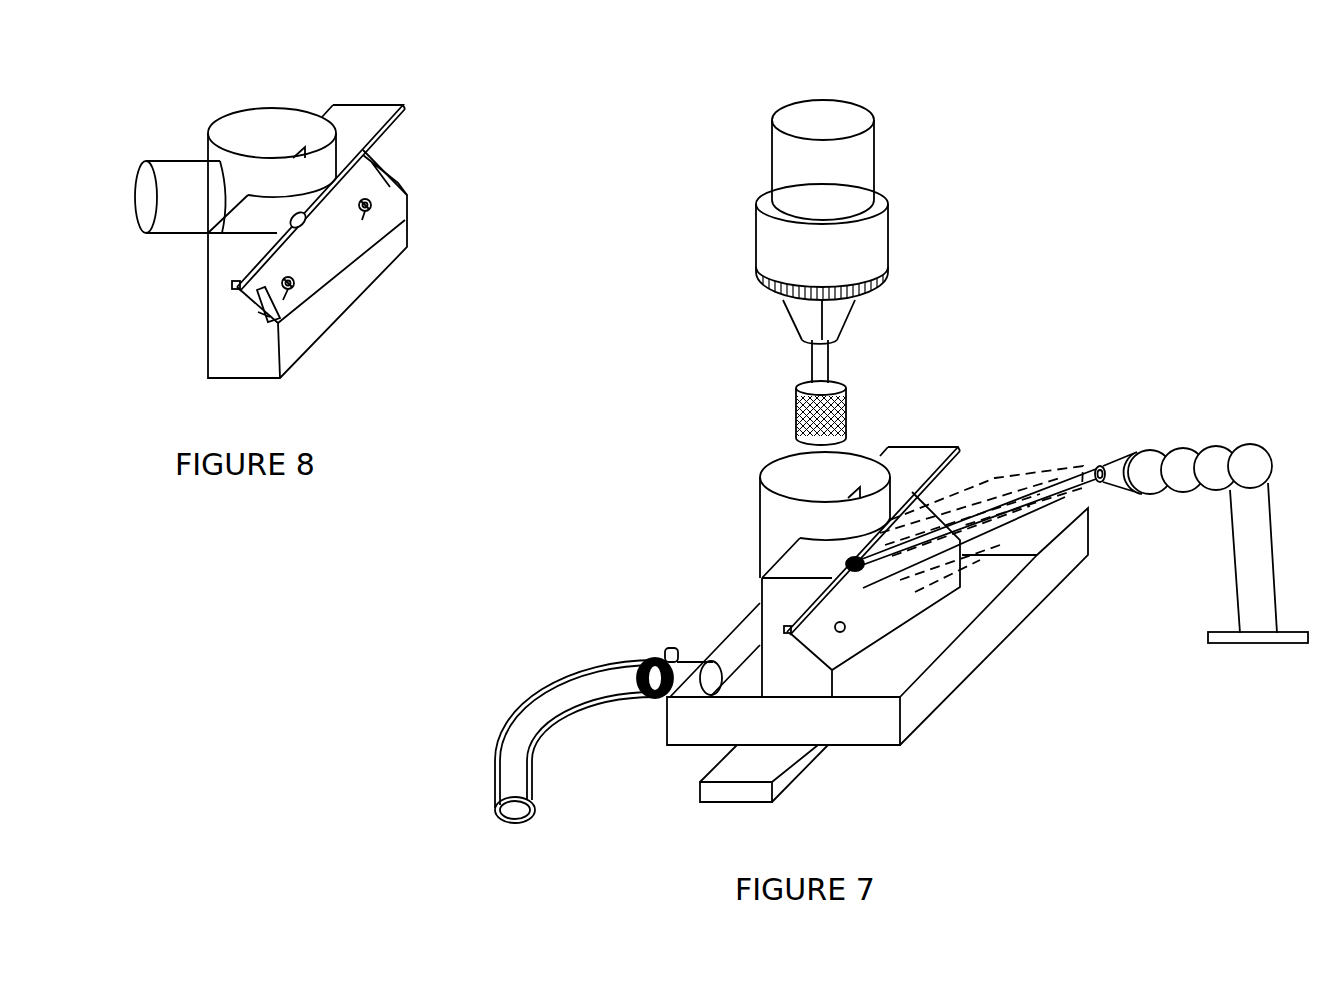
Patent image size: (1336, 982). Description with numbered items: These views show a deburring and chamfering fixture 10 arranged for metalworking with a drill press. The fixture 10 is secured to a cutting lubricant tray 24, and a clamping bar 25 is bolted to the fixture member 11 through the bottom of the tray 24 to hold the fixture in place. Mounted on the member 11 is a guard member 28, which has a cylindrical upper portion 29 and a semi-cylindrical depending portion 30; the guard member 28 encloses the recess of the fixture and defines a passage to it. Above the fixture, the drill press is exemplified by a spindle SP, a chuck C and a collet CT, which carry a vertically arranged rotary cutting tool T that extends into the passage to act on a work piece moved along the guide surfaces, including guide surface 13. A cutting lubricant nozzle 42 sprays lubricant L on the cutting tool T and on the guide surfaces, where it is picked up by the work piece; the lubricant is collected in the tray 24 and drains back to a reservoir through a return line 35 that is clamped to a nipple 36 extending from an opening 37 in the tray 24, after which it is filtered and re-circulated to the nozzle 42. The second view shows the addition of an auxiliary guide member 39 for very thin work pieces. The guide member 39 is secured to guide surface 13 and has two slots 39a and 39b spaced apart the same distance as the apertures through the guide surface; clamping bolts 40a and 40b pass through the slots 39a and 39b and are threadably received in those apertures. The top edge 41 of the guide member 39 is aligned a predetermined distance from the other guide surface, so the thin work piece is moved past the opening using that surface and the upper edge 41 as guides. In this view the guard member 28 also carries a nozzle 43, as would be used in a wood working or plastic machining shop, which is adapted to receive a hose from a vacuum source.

In FIG. 7, the fixture 10 is at (1022, 385).
In FIG. 7, the member 11 is at (914, 452).
In FIG. 8, the guide surface 13 is at (367, 167).
In FIG. 7, the guide surface 13 is at (865, 597).
In FIG. 7, the cutting lubricant tray 24 is at (990, 652).
In FIG. 7, the clamping bar 25 is at (785, 789).
In FIG. 8, the guard member 28 is at (198, 100).
In FIG. 7, the guard member 28 is at (740, 517).
In FIG. 8, the cylindrical upper portion 29 is at (263, 103).
In FIG. 7, the cylindrical upper portion 29 is at (757, 470).
In FIG. 7, the semi-cylindrical depending portion 30 is at (755, 558).
In FIG. 7, the return line 35 is at (542, 694).
In FIG. 7, the nipple 36 is at (690, 658).
In FIG. 7, the opening 37 is at (713, 657).
In FIG. 8, the auxiliary guide member 39 is at (340, 252).
In FIG. 8, the slot 39a is at (306, 303).
In FIG. 8, the slot 39b is at (380, 217).
In FIG. 8, the clamping bolt 40a is at (286, 297).
In FIG. 8, the clamping bolt 40b is at (378, 196).
In FIG. 8, the top edge 41 is at (233, 287).
In FIG. 7, the cutting lubricant nozzle 42 is at (1167, 443).
In FIG. 8, the nozzle 43 is at (168, 233).
In FIG. 7, the spindle SP is at (884, 177).
In FIG. 7, the chuck C is at (901, 244).
In FIG. 7, the collet CT is at (859, 320).
In FIG. 7, the cutting tool T is at (851, 410).
In FIG. 7, the laser beam L is at (1070, 462).